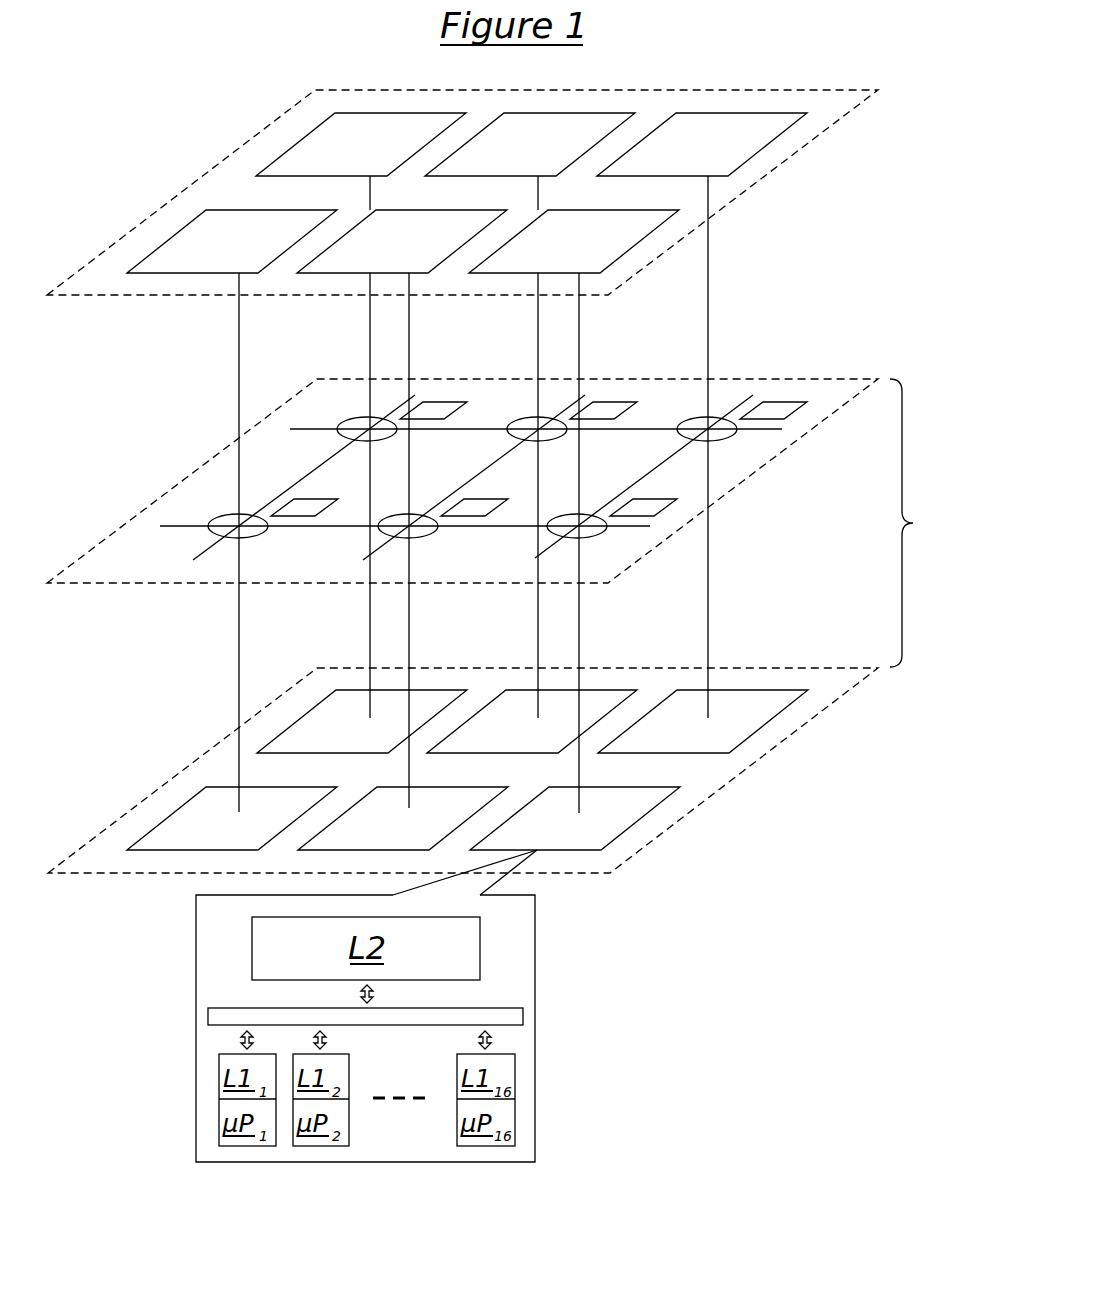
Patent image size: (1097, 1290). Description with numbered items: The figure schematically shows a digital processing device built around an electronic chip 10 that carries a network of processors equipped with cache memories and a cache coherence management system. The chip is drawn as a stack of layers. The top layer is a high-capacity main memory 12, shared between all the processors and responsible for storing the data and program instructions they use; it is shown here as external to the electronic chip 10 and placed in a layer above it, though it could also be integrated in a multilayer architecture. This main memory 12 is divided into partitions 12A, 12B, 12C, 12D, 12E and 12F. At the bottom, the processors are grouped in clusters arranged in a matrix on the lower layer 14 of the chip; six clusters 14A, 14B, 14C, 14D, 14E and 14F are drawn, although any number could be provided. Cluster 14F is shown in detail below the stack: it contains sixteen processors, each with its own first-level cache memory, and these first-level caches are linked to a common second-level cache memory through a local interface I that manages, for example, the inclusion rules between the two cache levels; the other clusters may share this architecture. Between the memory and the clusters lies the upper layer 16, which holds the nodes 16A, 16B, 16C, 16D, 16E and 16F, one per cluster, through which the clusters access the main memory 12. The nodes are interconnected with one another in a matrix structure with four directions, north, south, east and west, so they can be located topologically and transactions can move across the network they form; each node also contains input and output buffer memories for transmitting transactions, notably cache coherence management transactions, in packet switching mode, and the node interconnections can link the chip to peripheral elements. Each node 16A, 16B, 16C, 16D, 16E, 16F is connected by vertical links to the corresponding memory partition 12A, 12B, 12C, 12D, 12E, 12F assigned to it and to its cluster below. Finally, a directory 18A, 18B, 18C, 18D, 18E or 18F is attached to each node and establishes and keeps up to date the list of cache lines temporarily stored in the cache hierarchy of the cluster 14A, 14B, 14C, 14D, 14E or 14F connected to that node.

The electronic chip 10 is at (923, 523).
The main memory 12 is at (820, 90).
The partition of the main memory 12A is at (307, 170).
The partition of the main memory 12B is at (476, 170).
The partition of the main memory 12C is at (648, 170).
The partition of the main memory 12D is at (178, 267).
The partition of the main memory 12E is at (348, 267).
The partition of the main memory 12F is at (520, 267).
The lower layer 14 is at (821, 667).
The cluster 14A is at (308, 747).
The cluster 14B is at (478, 747).
The cluster 14C is at (649, 747).
The cluster 14D is at (178, 844).
The cluster 14E is at (349, 844).
The cluster 14F is at (521, 844).
The upper layer 16 is at (821, 379).
The node 16A is at (360, 419).
The node 16B is at (530, 419).
The node 16C is at (700, 419).
The node 16D is at (207, 535).
The node 16E is at (377, 535).
The node 16F is at (546, 535).
The directory 18A is at (450, 402).
The directory 18B is at (620, 402).
The directory 18C is at (790, 402).
The directory 18D is at (308, 498).
The directory 18E is at (478, 498).
The directory 18F is at (647, 498).
The local interface I is at (497, 1008).